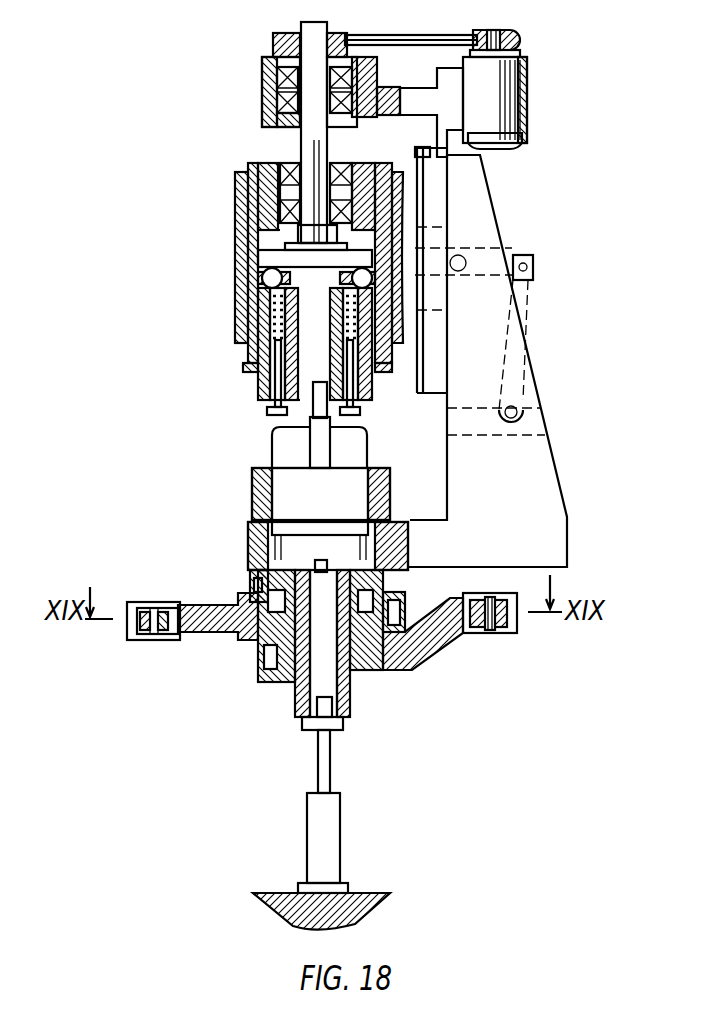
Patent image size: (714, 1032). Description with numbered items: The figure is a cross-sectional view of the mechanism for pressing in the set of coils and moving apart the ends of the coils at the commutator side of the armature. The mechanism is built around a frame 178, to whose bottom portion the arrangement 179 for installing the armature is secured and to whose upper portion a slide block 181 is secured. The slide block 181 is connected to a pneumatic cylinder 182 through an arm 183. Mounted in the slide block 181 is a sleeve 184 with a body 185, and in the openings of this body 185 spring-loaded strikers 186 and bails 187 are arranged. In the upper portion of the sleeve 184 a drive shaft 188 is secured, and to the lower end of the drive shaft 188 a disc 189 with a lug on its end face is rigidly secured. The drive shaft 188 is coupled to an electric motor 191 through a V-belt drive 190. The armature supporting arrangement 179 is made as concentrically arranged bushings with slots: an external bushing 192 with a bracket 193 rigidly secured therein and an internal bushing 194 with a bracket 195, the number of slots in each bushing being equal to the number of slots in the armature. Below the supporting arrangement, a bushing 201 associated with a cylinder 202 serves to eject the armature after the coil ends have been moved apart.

The frame 178 is at (548, 476).
The arrangement for installing the armature 179 is at (242, 670).
The slide block 181 is at (244, 322).
The pneumatic cylinder 182 is at (528, 338).
The arm 183 is at (512, 256).
The sleeve 184 is at (252, 190).
The body 185 is at (262, 392).
The spring-loaded strikers 186 is at (265, 411).
The bails 187 is at (262, 290).
The drive shaft 188 is at (306, 150).
The disc 189 is at (268, 260).
The V-belt drive 190 is at (399, 36).
The electric motor 191 is at (523, 82).
The external bushing 192 is at (252, 587).
The bracket 193 is at (216, 631).
The internal bushing 194 is at (362, 670).
The bracket 195 is at (423, 650).
The bushing 201 is at (296, 695).
The cylinder 202 is at (332, 825).